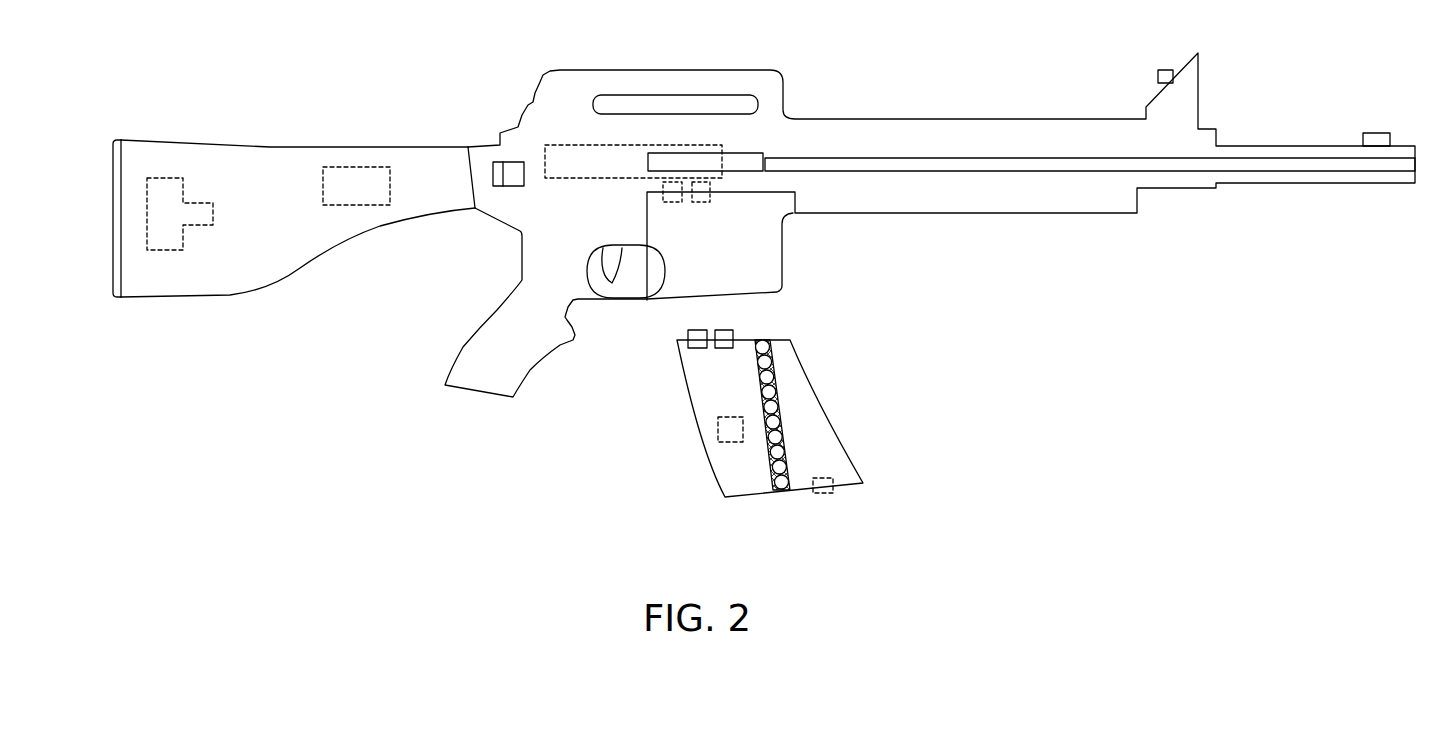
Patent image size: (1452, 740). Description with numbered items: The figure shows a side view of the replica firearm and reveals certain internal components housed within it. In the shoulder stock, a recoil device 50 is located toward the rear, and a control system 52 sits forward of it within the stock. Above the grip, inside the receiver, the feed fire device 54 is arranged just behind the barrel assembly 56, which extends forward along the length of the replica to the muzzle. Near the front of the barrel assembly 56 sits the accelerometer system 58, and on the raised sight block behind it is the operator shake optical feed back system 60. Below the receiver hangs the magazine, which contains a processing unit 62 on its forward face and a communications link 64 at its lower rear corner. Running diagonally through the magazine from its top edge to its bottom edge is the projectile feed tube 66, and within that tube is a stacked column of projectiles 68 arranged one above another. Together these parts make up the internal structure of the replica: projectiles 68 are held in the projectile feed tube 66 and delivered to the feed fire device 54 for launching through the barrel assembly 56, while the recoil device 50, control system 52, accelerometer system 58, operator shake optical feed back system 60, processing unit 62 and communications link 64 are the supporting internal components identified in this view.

The recoil device 50 is at (168, 175).
The control system 52 is at (359, 171).
The feed fire device 54 is at (563, 150).
The barrel assembly 56 is at (972, 155).
The accelerometer system 58 is at (1380, 129).
The operator shake optical feed back system 60 is at (1165, 69).
The processing unit 62 is at (716, 434).
The communications link 64 is at (826, 500).
The projectile feed tube 66 is at (785, 404).
The projectiles 68 is at (766, 335).